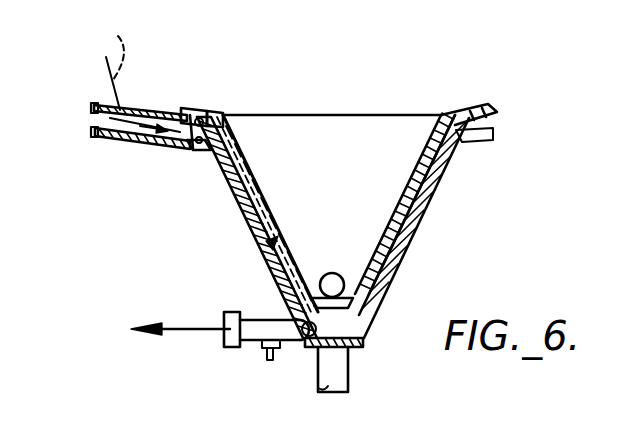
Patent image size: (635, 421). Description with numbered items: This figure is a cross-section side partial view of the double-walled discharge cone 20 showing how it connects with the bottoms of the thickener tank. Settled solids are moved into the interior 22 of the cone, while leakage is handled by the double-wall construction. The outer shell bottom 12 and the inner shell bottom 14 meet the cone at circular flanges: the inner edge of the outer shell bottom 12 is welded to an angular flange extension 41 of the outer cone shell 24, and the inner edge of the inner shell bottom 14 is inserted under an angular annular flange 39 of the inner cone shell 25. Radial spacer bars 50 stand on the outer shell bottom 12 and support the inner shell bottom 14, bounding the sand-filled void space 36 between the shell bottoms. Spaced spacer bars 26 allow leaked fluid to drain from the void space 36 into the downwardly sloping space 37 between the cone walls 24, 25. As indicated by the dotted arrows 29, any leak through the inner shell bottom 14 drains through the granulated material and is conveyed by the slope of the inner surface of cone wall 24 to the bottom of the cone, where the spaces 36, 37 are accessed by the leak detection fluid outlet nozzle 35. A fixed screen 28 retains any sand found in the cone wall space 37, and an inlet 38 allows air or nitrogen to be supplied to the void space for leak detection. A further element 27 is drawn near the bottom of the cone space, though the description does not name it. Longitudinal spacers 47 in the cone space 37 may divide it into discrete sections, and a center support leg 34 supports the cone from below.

The outer shell bottom 12 is at (97, 133).
The inner shell bottom 14 is at (143, 110).
The discharge cone 20 is at (124, 276).
The interior of the discharge cone 22 is at (382, 142).
The outer shell of discharge cone 24 is at (262, 282).
The inner cone shell 25 is at (216, 150).
The spacer bars 26 is at (205, 115).
The ball 27 is at (345, 272).
The fixed screen 28 is at (310, 343).
The dotted arrows 29 is at (104, 67).
The center support leg 34 is at (337, 368).
The leak detection fluid outlet nozzle 35 is at (267, 318).
The void space 36 is at (110, 107).
The space between cone walls 37 is at (212, 158).
The inlet 38 is at (255, 357).
The angular annular flange 39 is at (180, 110).
The angular flange extension 41 is at (187, 150).
The longitudinal spacers 47 is at (430, 155).
The radial spacer bars 50 is at (503, 123).